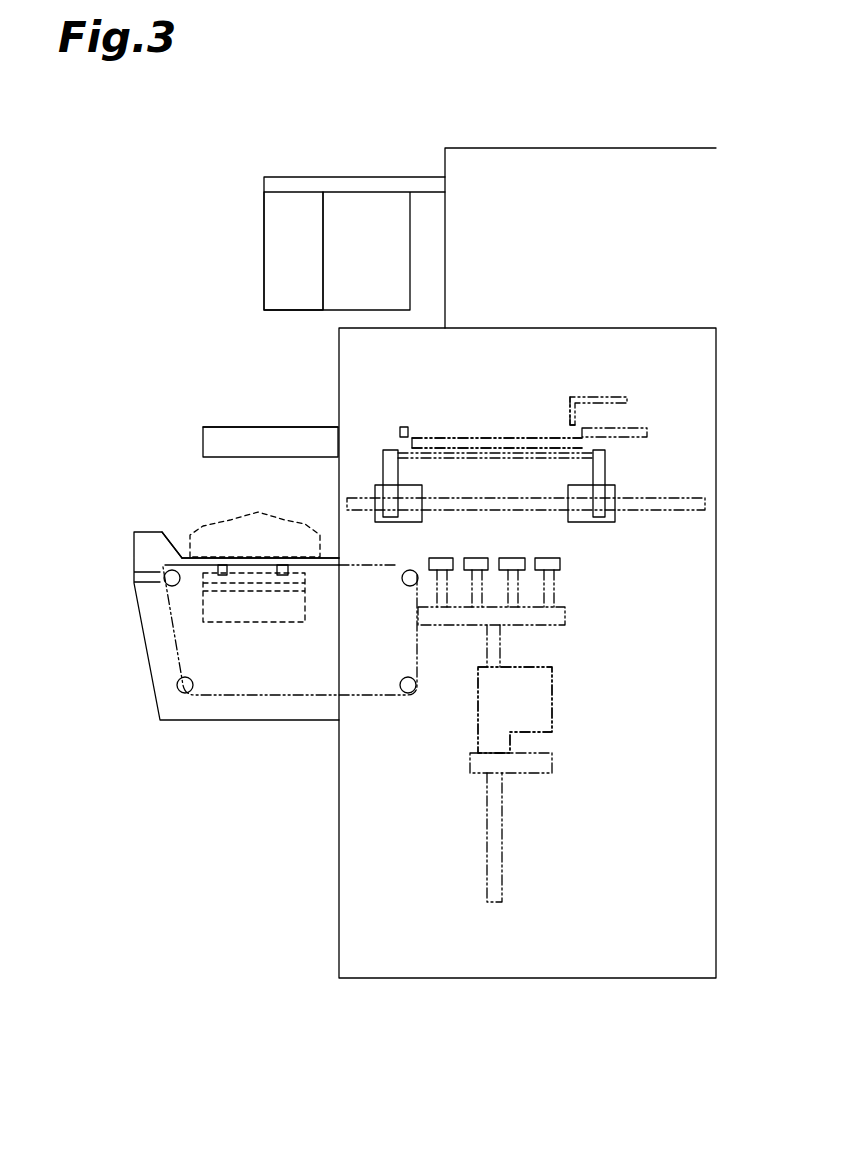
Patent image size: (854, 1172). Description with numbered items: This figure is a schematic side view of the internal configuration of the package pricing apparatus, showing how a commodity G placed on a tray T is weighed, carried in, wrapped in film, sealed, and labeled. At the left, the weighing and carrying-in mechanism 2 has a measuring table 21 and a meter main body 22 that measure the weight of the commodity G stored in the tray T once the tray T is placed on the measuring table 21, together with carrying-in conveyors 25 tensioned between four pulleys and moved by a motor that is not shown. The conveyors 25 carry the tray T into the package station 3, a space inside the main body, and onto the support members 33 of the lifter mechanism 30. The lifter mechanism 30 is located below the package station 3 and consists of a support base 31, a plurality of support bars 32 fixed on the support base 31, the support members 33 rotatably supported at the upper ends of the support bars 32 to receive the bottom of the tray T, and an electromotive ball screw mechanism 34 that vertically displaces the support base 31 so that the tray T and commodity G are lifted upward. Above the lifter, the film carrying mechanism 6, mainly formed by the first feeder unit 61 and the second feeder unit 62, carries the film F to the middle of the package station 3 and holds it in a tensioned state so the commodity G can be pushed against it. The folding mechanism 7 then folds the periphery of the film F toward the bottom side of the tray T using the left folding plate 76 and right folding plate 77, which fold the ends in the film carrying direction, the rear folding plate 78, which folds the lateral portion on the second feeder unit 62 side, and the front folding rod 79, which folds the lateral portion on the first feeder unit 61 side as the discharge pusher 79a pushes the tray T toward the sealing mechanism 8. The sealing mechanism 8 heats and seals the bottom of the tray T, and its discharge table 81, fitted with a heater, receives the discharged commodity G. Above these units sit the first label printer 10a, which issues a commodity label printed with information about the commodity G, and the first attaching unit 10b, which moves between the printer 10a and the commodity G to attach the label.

The package station 3 is at (650, 563).
The first label printer 10a is at (361, 203).
The first attaching unit 10b is at (281, 242).
The sealing mechanism 8 is at (231, 415).
The discharge table 81 is at (283, 427).
The weighing and carrying-in mechanism 2 is at (201, 732).
The measuring table 21 is at (330, 557).
The meter main body 22 is at (230, 622).
The carrying-in conveyors 25 is at (293, 695).
The commodity G is at (226, 512).
The tray T is at (198, 558).
The first feeder unit 61 is at (387, 450).
The second feeder unit 62 is at (607, 462).
The film carrying mechanism 6 is at (635, 487).
The film F is at (455, 457).
The left folding plate 76 is at (493, 438).
The right folding plate 77 is at (497, 443).
The rear folding plate 78 is at (633, 423).
The folding mechanism 7 is at (610, 376).
The discharge pusher 79a is at (570, 403).
The front folding rod 79 is at (405, 427).
The lifter mechanism 30 is at (447, 724).
The support base 31 is at (553, 625).
The support bars 32 is at (555, 592).
The support members 33 is at (544, 557).
The electromotive ball screw mechanism 34 is at (553, 710).